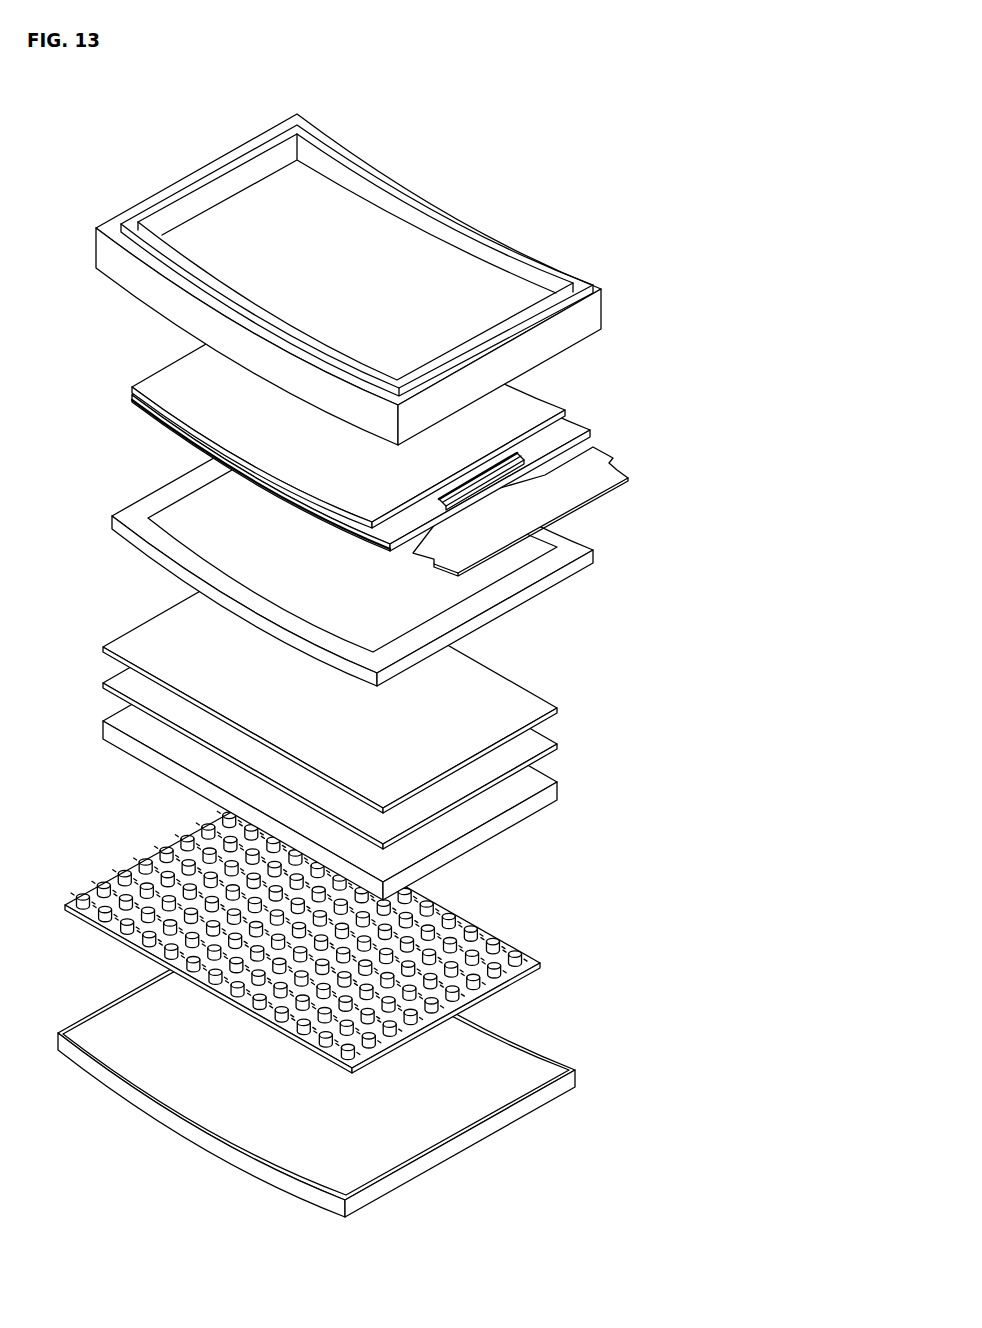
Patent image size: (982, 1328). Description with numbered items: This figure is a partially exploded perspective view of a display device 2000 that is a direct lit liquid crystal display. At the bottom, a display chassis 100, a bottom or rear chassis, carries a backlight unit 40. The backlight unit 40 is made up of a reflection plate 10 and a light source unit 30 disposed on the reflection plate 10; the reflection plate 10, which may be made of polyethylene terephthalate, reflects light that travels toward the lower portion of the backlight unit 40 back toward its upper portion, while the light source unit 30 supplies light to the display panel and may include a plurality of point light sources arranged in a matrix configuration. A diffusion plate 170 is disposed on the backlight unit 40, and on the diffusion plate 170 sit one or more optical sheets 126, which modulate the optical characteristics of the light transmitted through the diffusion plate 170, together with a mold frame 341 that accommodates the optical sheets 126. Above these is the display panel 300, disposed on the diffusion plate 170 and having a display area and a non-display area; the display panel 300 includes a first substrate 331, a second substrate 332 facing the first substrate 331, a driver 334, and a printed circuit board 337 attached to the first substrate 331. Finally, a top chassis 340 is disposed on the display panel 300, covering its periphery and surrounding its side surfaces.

The display device 2000 is at (501, 148).
The top chassis 340 is at (596, 313).
The display panel 300 is at (444, 425).
The first substrate 331 is at (547, 412).
The second substrate 332 is at (567, 432).
The driver 334 is at (527, 446).
The printed circuit board 337 is at (628, 472).
The mold frame 341 is at (588, 547).
The optical sheets 126 is at (557, 708).
The diffusion plate 170 is at (557, 792).
The backlight unit 40 is at (353, 936).
The light source unit 30 is at (515, 947).
The reflection plate 10 is at (520, 979).
The bottom chassis 100 is at (572, 1080).